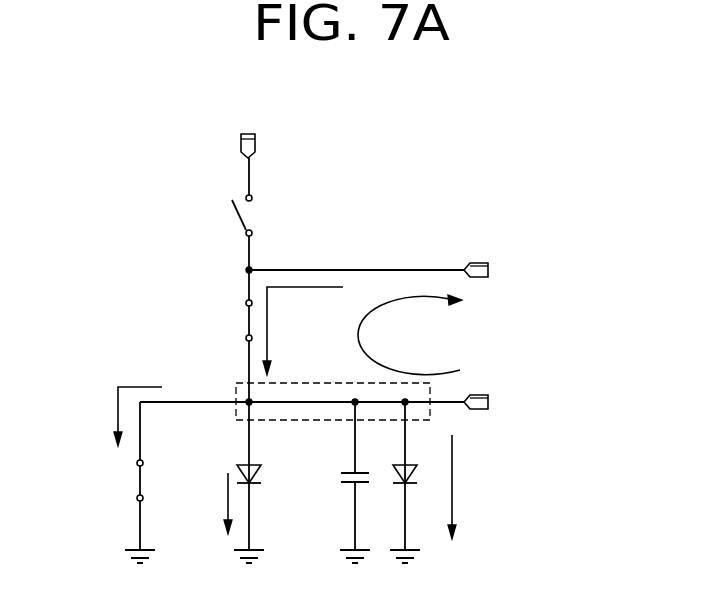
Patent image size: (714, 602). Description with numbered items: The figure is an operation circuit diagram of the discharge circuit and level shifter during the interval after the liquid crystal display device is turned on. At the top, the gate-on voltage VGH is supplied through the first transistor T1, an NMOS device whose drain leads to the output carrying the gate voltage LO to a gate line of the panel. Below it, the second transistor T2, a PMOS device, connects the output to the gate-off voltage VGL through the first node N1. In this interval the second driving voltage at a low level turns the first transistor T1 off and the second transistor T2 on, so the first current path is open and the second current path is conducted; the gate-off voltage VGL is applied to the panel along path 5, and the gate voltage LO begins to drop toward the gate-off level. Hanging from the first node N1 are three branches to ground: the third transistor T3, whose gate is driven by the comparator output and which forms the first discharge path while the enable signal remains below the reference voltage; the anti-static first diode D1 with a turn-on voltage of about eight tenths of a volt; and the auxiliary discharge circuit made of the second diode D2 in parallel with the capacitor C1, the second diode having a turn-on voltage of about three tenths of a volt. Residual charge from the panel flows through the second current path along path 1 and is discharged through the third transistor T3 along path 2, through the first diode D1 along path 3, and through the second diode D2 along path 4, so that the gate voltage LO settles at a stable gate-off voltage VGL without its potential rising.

The gate-on voltage VGH is at (247, 150).
The first transistor T1 is at (251, 232).
The gate voltage LO is at (382, 272).
The second transistor T2 is at (235, 336).
The first node N1 is at (333, 382).
The gate-off voltage VGL is at (334, 404).
The third transistor T3 is at (144, 482).
The first diode D1 is at (258, 482).
The capacitor C1 is at (345, 482).
The second diode D2 is at (414, 482).
The path 1 is at (303, 331).
The path 2 is at (123, 416).
The path 3 is at (214, 503).
The path 4 is at (466, 487).
The path 5 is at (410, 335).